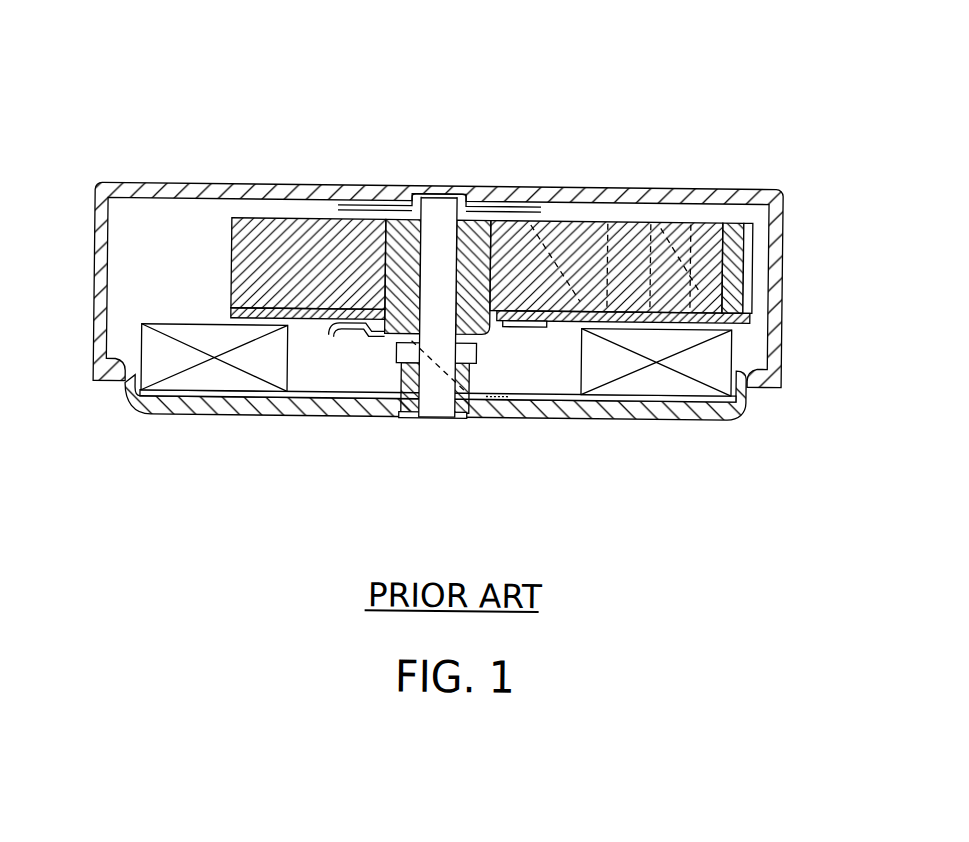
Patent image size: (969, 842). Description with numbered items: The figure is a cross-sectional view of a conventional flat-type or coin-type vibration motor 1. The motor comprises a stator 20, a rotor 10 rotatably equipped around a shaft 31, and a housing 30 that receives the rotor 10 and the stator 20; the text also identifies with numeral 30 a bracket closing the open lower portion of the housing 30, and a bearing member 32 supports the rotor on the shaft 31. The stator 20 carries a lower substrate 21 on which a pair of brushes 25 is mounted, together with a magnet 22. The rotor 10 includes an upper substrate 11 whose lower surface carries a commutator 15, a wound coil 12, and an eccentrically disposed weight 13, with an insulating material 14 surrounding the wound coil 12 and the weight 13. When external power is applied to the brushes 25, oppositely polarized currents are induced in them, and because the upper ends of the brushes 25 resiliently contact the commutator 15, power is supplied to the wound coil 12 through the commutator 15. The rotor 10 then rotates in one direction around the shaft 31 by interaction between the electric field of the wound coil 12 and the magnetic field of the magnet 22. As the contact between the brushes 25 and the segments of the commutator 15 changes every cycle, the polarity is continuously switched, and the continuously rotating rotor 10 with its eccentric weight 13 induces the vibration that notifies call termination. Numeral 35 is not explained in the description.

The vibration motor 1 is at (447, 269).
The rotor 10 is at (467, 313).
The upper substrate 11 is at (750, 315).
The wound coil 12 is at (621, 233).
The weight 13 is at (727, 222).
The insulating material 14 is at (274, 242).
The commutator 15 is at (533, 327).
The stator 20 is at (144, 301).
The lower substrate 21 is at (540, 430).
The magnet 22 is at (226, 388).
The brushes 25 is at (329, 340).
The housing 30 is at (151, 186).
The shaft 31 is at (429, 207).
The bearing member 32 is at (494, 204).
The base plate 35 is at (676, 417).